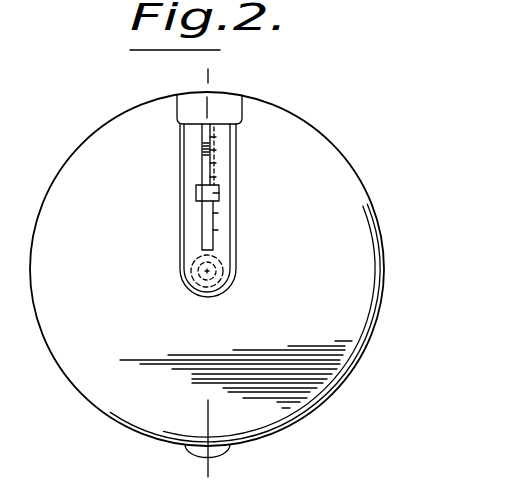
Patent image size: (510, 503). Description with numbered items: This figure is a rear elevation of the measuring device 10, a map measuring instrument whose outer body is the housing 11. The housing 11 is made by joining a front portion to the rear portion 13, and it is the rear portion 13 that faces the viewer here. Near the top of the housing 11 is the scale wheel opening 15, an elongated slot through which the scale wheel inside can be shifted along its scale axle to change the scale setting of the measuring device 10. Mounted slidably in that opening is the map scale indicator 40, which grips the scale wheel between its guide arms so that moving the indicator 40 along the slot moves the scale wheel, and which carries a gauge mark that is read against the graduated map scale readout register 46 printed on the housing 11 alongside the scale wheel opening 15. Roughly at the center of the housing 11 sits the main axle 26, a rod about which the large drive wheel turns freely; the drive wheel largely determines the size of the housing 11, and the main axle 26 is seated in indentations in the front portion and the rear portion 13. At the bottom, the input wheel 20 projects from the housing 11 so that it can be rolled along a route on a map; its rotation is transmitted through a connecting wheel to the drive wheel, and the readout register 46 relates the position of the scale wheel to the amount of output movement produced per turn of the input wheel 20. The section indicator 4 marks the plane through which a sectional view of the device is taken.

The measuring device 10 is at (337, 126).
The housing 11 is at (93, 410).
The rear portion 13 is at (93, 353).
The scale wheel opening 15 is at (212, 167).
The input wheel 20 is at (217, 454).
The main axle 26 is at (213, 286).
The map scale indicator 40 is at (196, 191).
The graduated map scale readout register 46 is at (222, 223).
The section line 4- 4 is at (230, 477).